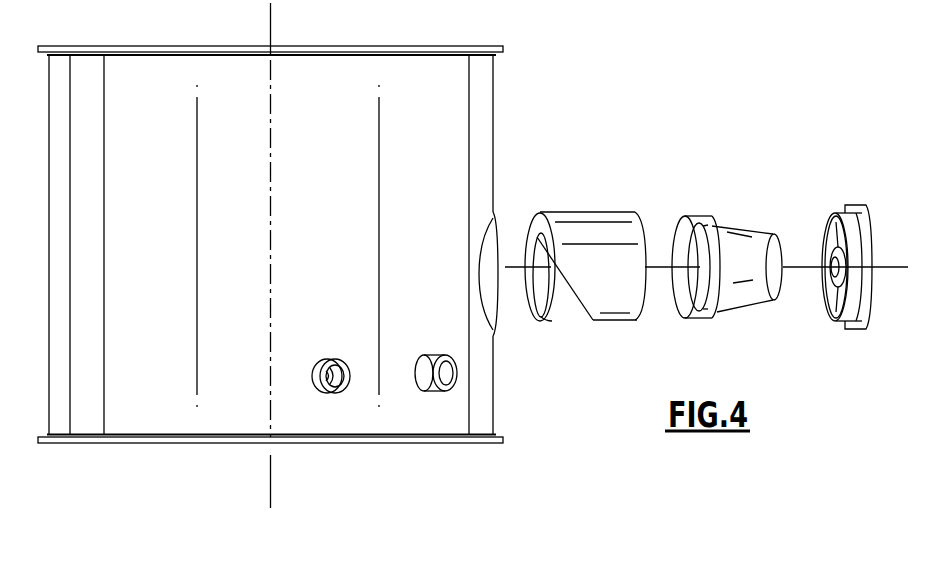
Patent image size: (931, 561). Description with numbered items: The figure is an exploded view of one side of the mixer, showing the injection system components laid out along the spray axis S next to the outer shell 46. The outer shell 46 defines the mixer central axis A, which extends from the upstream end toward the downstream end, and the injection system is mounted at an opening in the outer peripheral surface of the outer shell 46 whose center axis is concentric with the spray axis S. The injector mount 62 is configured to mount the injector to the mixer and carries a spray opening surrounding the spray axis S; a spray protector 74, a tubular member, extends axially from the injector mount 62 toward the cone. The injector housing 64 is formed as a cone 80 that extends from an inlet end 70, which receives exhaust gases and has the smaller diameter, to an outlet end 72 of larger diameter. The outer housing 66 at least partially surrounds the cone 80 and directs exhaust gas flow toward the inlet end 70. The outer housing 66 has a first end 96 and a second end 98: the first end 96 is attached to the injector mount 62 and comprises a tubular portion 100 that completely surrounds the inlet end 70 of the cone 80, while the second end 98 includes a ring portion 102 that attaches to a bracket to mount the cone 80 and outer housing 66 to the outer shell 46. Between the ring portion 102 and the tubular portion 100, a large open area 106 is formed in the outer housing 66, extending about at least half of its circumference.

The outer shell 46 is at (460, 167).
The mixer central axis A is at (271, 480).
The spray axis S is at (888, 267).
The second end 98 is at (528, 230).
The outer housing 66 is at (563, 212).
The tubular portion 100 is at (612, 228).
The ring portion 102 is at (545, 322).
The open area 106 is at (568, 305).
The first end 96 is at (640, 322).
The outlet end 72 is at (684, 215).
The cone 80 is at (737, 248).
The inlet end 70 is at (783, 297).
The injector housing 64 is at (733, 310).
The injector mount 62 is at (855, 205).
The spray protector 74 is at (833, 226).